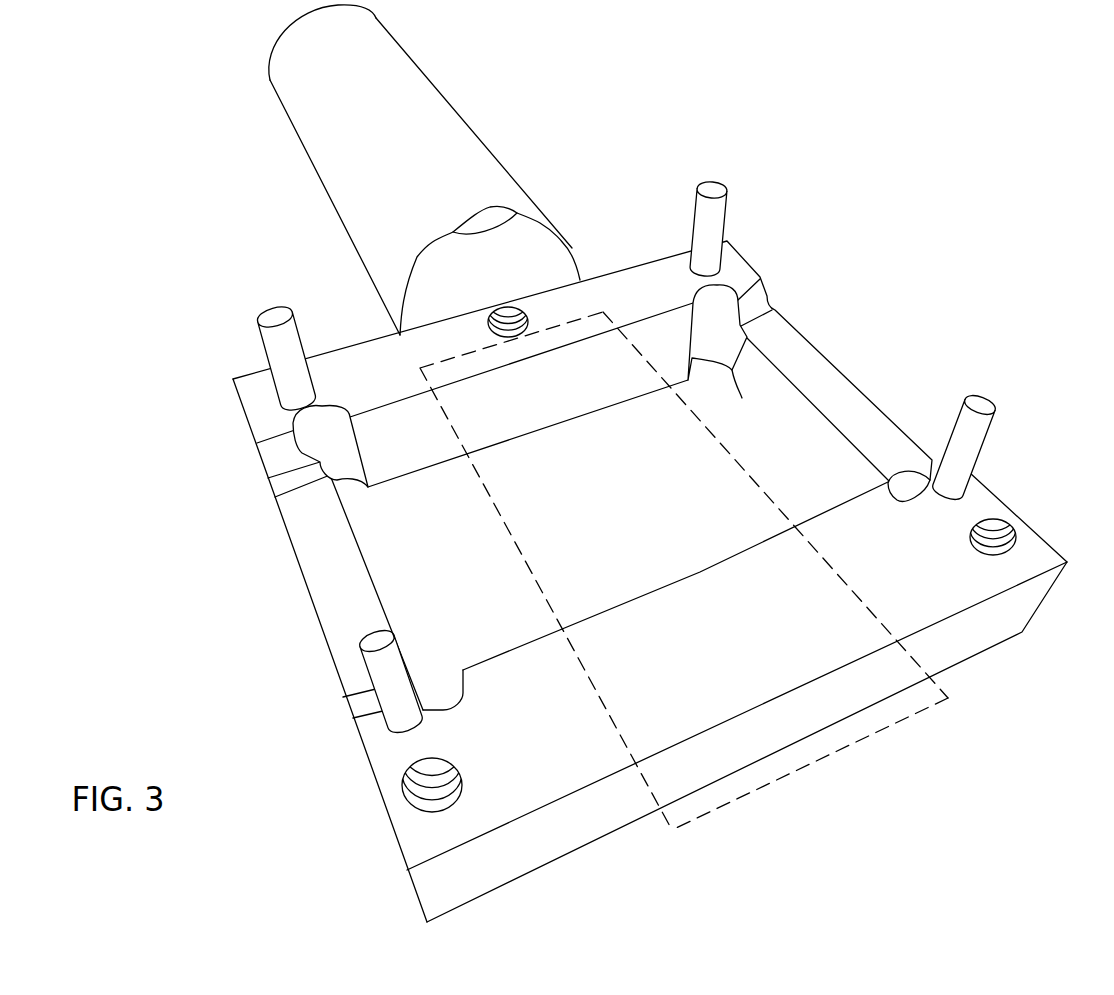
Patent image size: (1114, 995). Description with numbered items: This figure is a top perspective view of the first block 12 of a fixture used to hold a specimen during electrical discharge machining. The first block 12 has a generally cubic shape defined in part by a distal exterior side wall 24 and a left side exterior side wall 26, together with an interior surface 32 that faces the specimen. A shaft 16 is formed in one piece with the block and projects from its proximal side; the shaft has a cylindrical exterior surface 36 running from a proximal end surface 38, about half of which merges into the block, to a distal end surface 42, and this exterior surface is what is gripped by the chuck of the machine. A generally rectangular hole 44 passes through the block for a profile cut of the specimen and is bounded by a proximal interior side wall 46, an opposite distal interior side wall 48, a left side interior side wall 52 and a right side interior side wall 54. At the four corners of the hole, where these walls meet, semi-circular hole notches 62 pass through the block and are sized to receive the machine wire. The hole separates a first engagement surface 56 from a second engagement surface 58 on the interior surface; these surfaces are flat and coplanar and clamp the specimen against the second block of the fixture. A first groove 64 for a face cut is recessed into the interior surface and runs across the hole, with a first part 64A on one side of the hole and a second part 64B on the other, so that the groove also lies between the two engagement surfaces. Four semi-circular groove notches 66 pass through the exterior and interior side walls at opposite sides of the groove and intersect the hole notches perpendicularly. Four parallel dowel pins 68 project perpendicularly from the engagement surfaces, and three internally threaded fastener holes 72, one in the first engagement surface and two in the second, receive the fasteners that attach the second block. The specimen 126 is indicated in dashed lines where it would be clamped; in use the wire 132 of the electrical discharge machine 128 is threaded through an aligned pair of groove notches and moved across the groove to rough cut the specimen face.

The first block 12 is at (872, 407).
The shaft 16 is at (472, 120).
The distal exterior side wall 24 is at (1018, 610).
The left side exterior side wall 26 is at (313, 617).
The interior surface 32 is at (661, 282).
The cylindrical exterior surface 36 is at (323, 152).
The proximal end surface 38 is at (547, 235).
The distal end surface 42 is at (270, 58).
The hole 44 is at (740, 425).
The proximal interior side wall 46 is at (543, 403).
The distal interior side wall 48 is at (705, 575).
The left side interior side wall 52 is at (372, 565).
The right side interior side wall 54 is at (798, 425).
The first engagement surface 56 is at (603, 323).
The second engagement surface 58 is at (728, 698).
The hole notches 62 is at (313, 430).
The first groove 64 is at (282, 527).
The first part of the first groove 64A is at (323, 563).
The second part of the first groove 64B is at (813, 368).
The groove notches 66 is at (268, 462).
The dowel pins 68 is at (272, 348).
The internally threaded fastener holes 72 is at (484, 319).
The specimen 126 is at (910, 720).
The electrical discharge machine 128 is at (700, 808).
The wire 132 is at (905, 712).